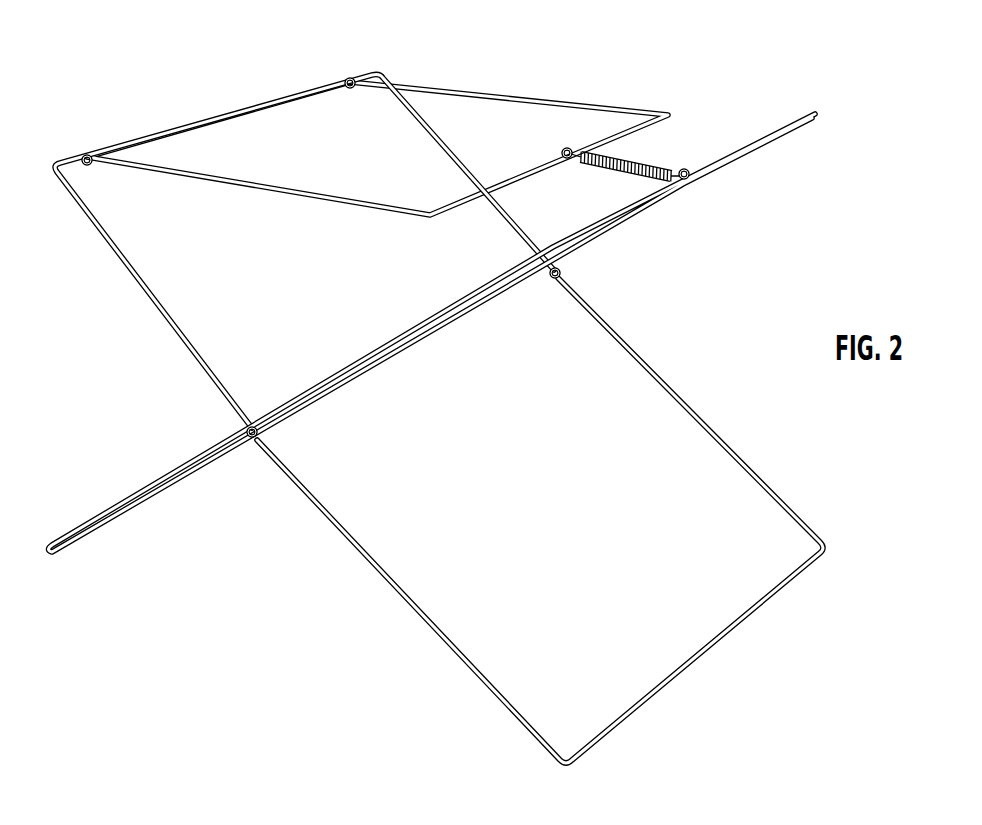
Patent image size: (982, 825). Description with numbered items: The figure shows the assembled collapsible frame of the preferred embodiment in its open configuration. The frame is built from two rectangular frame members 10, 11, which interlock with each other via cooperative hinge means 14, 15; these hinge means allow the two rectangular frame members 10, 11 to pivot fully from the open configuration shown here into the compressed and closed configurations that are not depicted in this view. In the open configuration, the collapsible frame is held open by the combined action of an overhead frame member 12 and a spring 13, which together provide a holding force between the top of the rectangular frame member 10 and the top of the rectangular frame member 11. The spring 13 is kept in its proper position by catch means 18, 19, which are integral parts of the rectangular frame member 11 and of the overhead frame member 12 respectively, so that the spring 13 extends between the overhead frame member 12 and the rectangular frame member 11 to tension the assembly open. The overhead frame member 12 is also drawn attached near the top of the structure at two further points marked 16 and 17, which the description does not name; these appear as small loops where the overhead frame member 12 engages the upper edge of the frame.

The rectangular frame member 10 is at (350, 533).
The rectangular frame member 11 is at (380, 343).
The overhead frame member 12 is at (326, 203).
The spring 13 is at (632, 180).
The hinge means 14 is at (252, 440).
The hinge means 15 is at (555, 280).
The eyelet 16 is at (88, 153).
The eyelet 17 is at (352, 78).
The catch means 18 is at (684, 169).
The catch means 19 is at (563, 154).